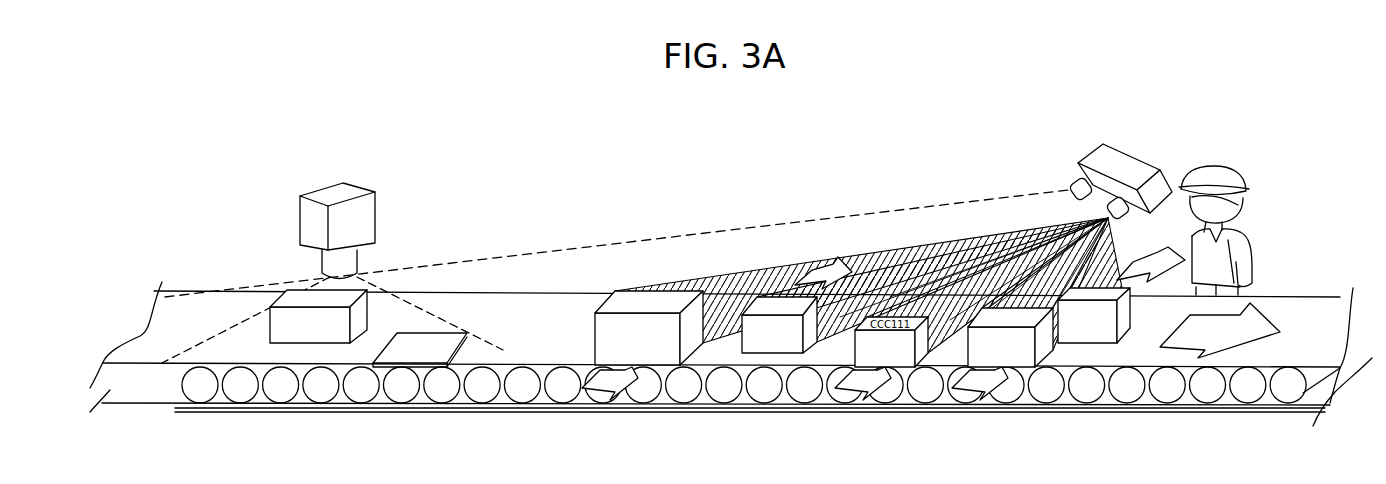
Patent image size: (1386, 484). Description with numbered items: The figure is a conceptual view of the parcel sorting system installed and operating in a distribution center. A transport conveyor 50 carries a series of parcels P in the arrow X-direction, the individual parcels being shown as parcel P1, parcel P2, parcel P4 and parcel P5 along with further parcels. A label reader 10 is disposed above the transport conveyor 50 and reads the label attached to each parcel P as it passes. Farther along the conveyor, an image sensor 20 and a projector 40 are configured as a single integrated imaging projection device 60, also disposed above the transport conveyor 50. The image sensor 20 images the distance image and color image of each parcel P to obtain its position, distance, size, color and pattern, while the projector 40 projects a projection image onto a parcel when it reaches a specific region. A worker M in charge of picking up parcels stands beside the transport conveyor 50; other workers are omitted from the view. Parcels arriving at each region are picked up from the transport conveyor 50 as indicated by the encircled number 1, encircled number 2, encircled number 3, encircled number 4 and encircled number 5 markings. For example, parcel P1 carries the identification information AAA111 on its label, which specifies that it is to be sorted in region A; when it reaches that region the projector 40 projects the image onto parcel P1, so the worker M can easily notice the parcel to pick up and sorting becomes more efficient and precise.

The transport conveyor 50 is at (247, 300).
The label reader 10 is at (335, 195).
The parcel P is at (292, 292).
The imaging projection device 60 is at (683, 226).
The image sensor 20 is at (683, 226).
The projector 40 is at (1140, 128).
The parcel P1 is at (678, 288).
The parcel P2 is at (760, 293).
The parcel P4 is at (1013, 308).
The parcel P5 is at (1070, 293).
The encircled number 1 is at (603, 392).
The encircled number 2 is at (821, 272).
The encircled number 3 is at (848, 392).
The encircled number 4 is at (965, 392).
The encircled number 5 is at (1143, 272).
The arrow X-direction X is at (1220, 330).
The worker M is at (1222, 177).